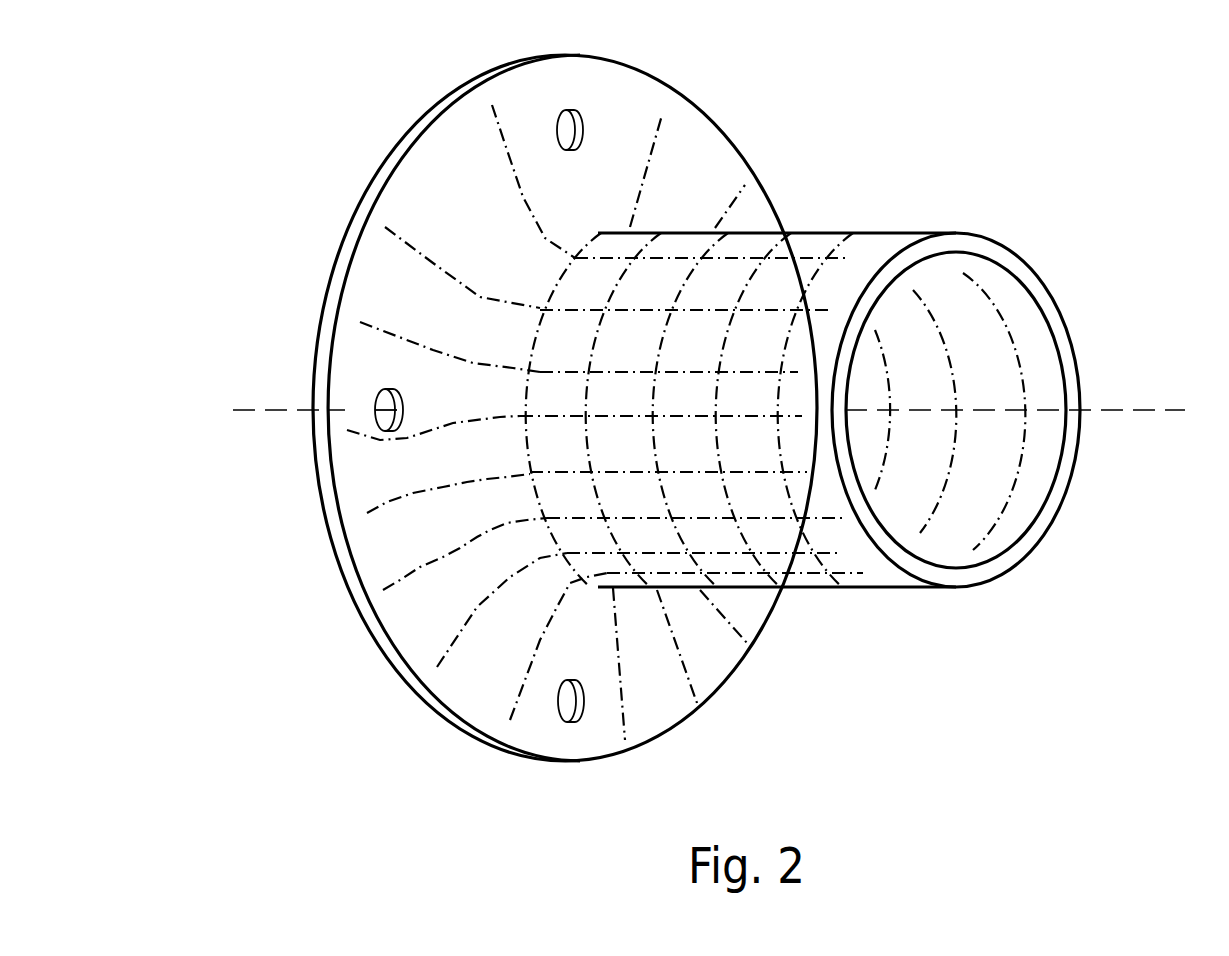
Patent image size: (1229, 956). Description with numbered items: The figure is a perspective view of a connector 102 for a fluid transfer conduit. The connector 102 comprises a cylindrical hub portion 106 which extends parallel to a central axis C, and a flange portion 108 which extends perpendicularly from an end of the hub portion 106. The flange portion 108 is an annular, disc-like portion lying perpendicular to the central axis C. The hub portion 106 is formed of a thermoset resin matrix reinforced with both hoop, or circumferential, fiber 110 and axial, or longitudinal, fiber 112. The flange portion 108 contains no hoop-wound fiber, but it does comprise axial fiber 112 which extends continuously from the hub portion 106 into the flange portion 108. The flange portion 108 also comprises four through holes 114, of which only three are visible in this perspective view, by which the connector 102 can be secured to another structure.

The connector 102 is at (974, 130).
The hub portion 106 is at (948, 542).
The flange portion 108 is at (657, 687).
The hoop fiber 110 is at (790, 497).
The axial fiber 112 is at (732, 260).
The through holes 114 is at (557, 137).